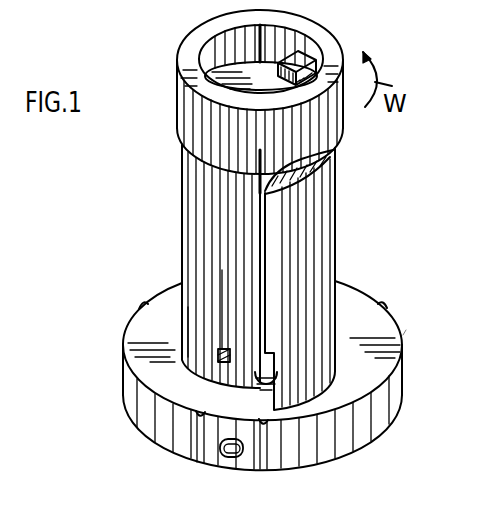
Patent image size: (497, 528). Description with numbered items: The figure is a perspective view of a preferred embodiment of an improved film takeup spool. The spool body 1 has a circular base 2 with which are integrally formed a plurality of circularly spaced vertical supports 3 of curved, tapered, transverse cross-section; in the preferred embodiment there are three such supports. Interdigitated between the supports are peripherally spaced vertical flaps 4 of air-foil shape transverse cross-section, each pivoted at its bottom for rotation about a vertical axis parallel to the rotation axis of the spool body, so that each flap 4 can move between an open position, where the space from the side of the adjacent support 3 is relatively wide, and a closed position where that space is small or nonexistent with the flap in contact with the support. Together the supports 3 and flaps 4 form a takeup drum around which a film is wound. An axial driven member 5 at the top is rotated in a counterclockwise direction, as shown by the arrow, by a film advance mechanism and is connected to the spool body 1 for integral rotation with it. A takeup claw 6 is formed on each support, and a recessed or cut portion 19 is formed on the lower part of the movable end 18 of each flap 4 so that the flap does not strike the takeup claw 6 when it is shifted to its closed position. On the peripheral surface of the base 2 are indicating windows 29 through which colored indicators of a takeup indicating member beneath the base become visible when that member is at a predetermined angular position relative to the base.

The spool body 1 is at (406, 330).
The circular base 2 is at (370, 387).
The vertical support 3 is at (203, 220).
The vertical flap 4 is at (321, 212).
The axial driven member 5 is at (343, 45).
The takeup claw 6 is at (220, 360).
The movable end of flap 18 is at (270, 279).
The recessed or cut portion 19 is at (272, 393).
The indicating window 29 is at (229, 457).